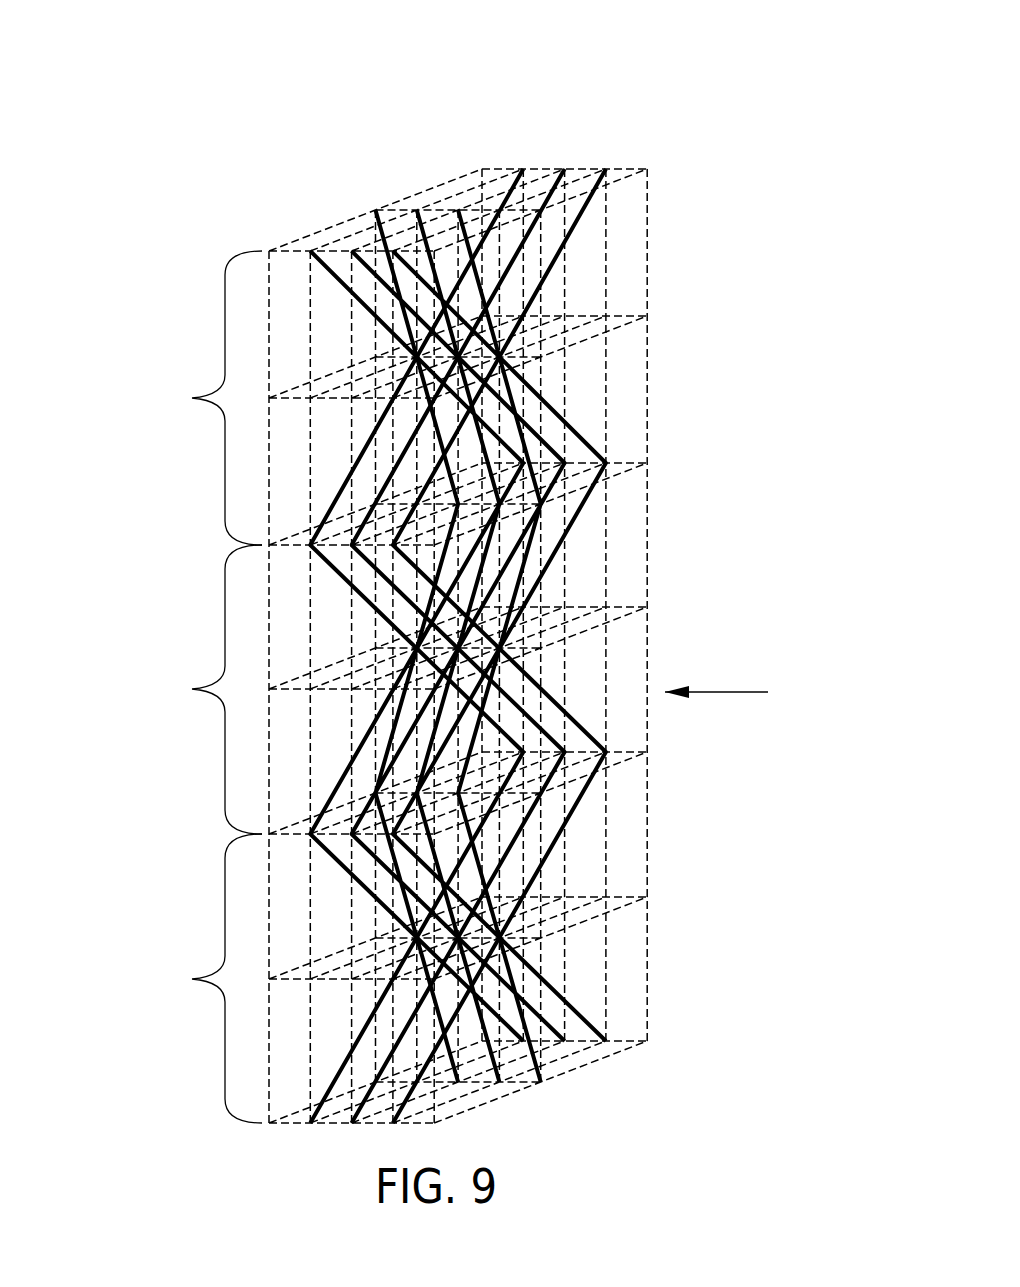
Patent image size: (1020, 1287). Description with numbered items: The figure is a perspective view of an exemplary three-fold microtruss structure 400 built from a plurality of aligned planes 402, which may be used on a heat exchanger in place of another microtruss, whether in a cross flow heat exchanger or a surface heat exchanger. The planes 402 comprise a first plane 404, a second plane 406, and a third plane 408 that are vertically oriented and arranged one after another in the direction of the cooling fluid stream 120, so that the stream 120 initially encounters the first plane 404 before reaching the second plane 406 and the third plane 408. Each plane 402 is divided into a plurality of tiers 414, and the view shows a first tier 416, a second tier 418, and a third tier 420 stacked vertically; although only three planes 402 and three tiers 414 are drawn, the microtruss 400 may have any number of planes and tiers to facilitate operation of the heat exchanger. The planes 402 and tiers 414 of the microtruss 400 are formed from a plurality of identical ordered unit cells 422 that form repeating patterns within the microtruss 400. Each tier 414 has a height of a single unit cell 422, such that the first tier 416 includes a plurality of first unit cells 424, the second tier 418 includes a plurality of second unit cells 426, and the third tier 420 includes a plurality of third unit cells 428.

The microtruss structure 400 is at (243, 207).
The planes 402 is at (613, 112).
The first plane 404 is at (607, 168).
The second plane 406 is at (563, 168).
The third plane 408 is at (523, 168).
The tiers 414 is at (125, 649).
The first tier 416 is at (396, 978).
The second tier 418 is at (396, 689).
The third tier 420 is at (203, 398).
The unit cells 422 is at (713, 477).
The first unit cells 424 is at (657, 957).
The second unit cells 426 is at (657, 582).
The third unit cells 428 is at (657, 293).
The cooling fluid stream 120 is at (727, 688).